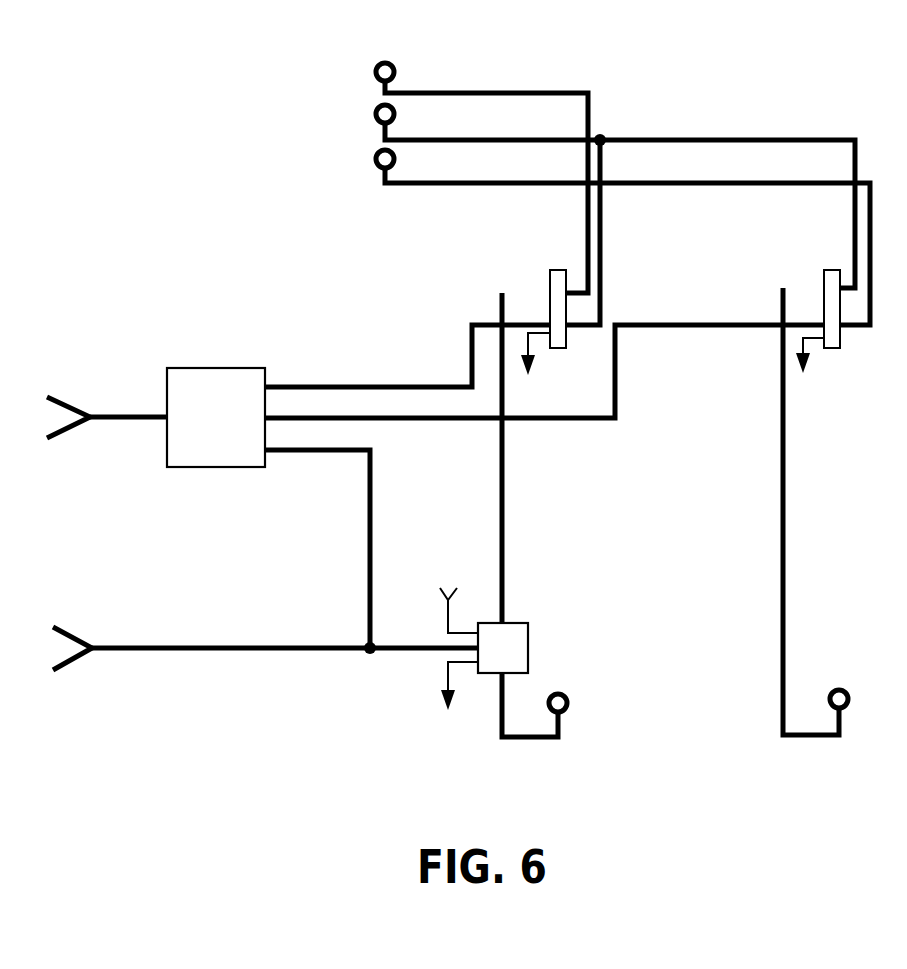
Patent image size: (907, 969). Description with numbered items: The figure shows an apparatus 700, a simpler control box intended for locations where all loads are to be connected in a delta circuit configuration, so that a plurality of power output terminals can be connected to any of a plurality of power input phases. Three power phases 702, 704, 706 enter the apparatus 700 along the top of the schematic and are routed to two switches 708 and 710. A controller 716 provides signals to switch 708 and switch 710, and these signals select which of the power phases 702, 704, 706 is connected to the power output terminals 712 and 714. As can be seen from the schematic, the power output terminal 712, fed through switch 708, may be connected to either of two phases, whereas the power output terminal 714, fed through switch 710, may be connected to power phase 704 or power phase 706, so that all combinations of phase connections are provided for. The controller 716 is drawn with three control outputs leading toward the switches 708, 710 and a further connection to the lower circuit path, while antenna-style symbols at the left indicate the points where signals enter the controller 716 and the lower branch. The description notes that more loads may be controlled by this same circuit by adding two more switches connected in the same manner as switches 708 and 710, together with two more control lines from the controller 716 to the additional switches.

The control box 700 is at (220, 201).
The power phase 702 is at (376, 72).
The power phase 704 is at (376, 114).
The power phase 706 is at (376, 159).
The switch 708 is at (558, 348).
The switch 710 is at (832, 348).
The power output terminal 712 is at (558, 694).
The power output terminal 714 is at (839, 690).
The controller 716 is at (213, 368).